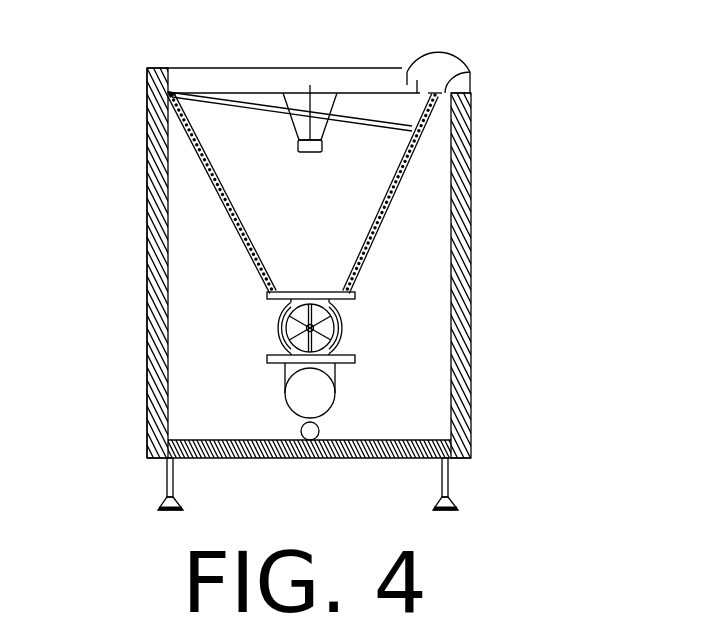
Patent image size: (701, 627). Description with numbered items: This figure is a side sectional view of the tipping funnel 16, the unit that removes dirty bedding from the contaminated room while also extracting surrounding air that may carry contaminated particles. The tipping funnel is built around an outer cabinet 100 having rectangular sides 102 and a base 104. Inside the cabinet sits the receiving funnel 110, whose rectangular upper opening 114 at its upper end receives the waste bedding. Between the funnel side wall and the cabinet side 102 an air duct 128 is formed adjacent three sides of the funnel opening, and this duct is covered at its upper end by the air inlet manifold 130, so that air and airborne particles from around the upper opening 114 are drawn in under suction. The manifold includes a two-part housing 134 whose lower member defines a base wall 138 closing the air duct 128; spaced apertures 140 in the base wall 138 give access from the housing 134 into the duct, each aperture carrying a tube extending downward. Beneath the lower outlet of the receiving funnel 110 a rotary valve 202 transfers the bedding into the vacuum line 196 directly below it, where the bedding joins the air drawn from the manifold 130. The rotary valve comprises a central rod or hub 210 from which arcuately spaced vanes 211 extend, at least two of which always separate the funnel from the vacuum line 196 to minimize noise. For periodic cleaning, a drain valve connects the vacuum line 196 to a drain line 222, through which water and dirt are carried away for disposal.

The tipping funnel 16 is at (100, 180).
The outer cabinet 100 is at (461, 233).
The cabinet side 102 is at (461, 290).
The base 104 is at (370, 458).
The receiving funnel 110 is at (393, 193).
The upper opening 114 is at (243, 113).
The air duct 128 is at (445, 118).
The air inlet manifold 130 is at (458, 53).
The two-part housing 134 is at (189, 78).
The base wall 138 is at (465, 103).
The apertures 140 is at (472, 71).
The vacuum line 196 is at (322, 396).
The rotary valve 202 is at (340, 336).
The central rod or hub 210 is at (334, 326).
The vanes 211 is at (291, 329).
The drain line 222 is at (320, 433).